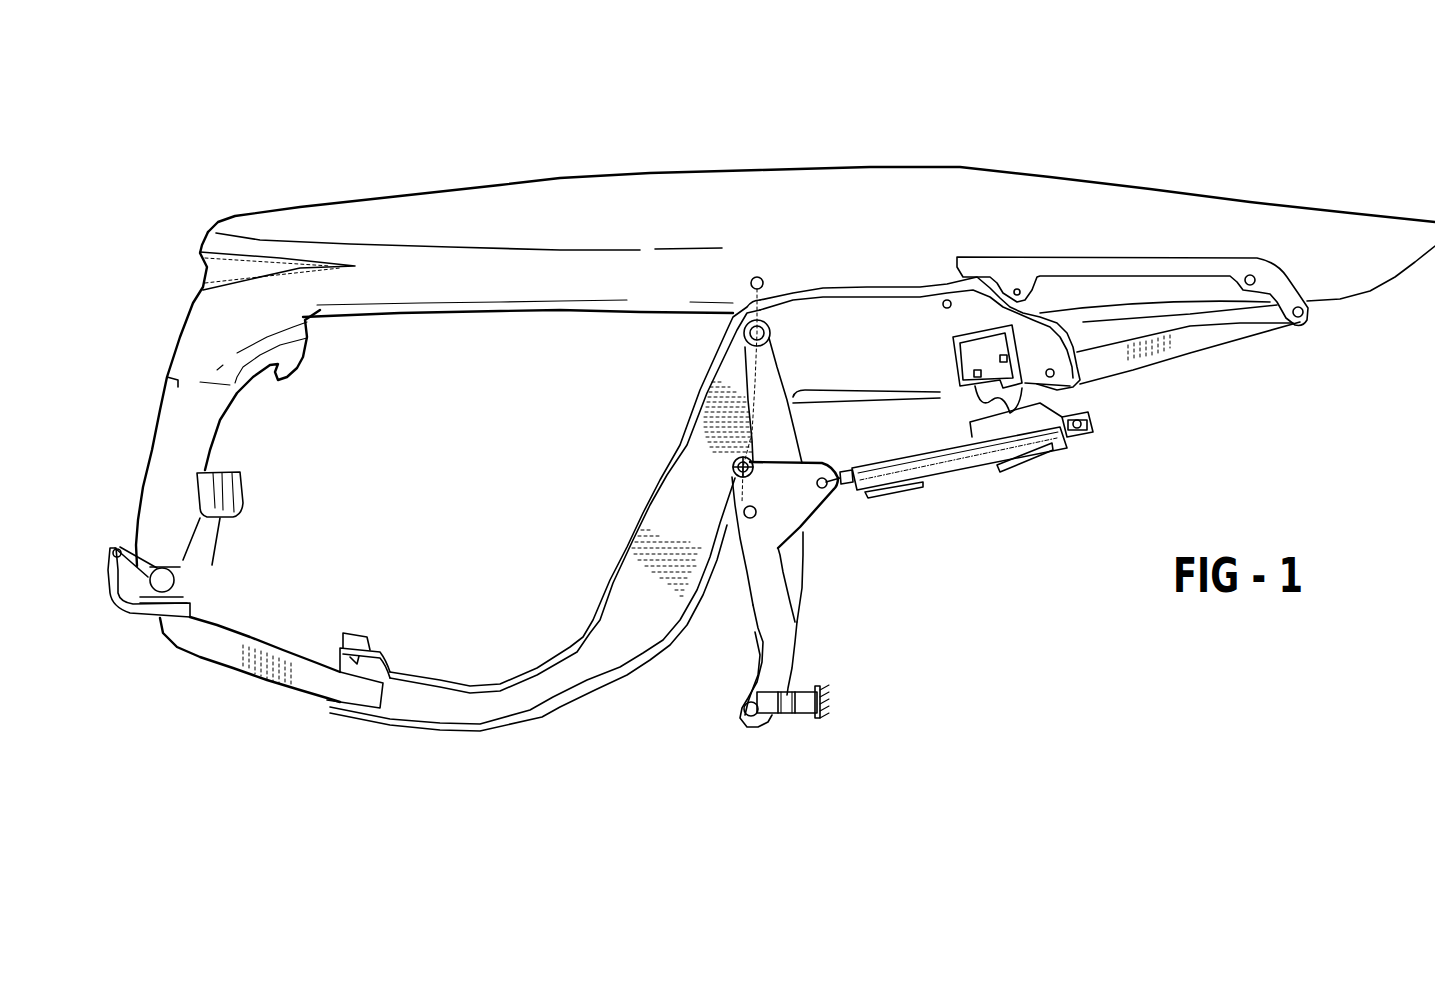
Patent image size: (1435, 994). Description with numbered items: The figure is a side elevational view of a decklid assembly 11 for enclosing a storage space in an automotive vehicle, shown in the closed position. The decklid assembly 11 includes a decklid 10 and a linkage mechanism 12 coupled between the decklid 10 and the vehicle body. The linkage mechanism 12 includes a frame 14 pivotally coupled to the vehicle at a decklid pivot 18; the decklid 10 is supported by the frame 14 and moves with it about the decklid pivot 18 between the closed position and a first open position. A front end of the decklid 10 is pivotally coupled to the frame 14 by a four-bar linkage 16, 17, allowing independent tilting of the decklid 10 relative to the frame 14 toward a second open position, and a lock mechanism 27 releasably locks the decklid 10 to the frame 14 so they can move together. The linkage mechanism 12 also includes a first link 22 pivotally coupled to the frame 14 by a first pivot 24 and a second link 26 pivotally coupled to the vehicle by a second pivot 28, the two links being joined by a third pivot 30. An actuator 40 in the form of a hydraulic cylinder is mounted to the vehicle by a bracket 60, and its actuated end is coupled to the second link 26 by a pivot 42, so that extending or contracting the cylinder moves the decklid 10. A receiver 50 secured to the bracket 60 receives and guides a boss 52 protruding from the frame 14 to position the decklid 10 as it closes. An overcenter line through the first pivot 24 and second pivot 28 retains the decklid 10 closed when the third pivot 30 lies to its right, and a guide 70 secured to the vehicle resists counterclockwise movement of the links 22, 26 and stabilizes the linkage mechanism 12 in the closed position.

The decklid 10 is at (745, 180).
The decklid assembly 11 is at (1070, 648).
The linkage mechanism 12 is at (903, 578).
The frame 14 is at (667, 520).
The four-bar linkage 16 is at (1203, 337).
The four-bar linkage 17 is at (1127, 288).
The decklid pivot 18 is at (170, 580).
The first link 22 is at (792, 553).
The first pivot 24 is at (768, 338).
The second link 26 is at (784, 658).
The lock mechanism 27 is at (273, 507).
The second pivot 28 is at (733, 470).
The third pivot 30 is at (763, 720).
The actuator 40 is at (947, 468).
The pivot 42 is at (823, 478).
The receiver 50 is at (1040, 405).
The boss 52 is at (983, 360).
The bracket 60 is at (1020, 468).
The guide 70 is at (817, 717).